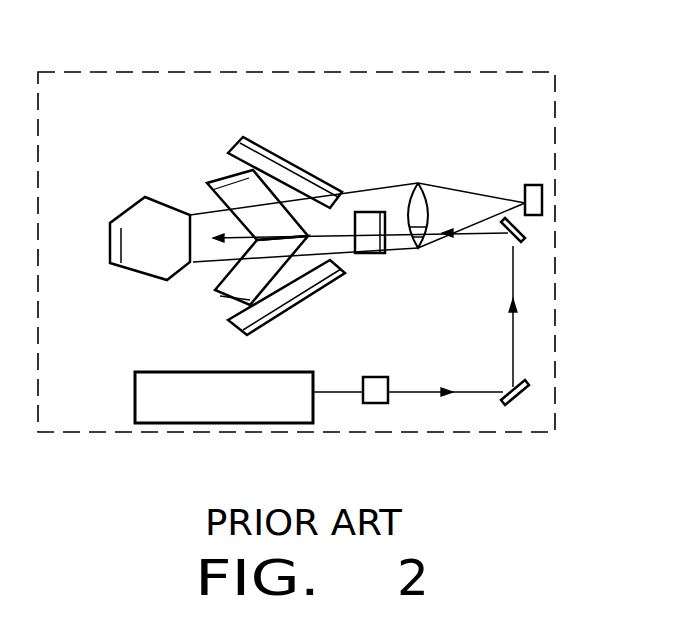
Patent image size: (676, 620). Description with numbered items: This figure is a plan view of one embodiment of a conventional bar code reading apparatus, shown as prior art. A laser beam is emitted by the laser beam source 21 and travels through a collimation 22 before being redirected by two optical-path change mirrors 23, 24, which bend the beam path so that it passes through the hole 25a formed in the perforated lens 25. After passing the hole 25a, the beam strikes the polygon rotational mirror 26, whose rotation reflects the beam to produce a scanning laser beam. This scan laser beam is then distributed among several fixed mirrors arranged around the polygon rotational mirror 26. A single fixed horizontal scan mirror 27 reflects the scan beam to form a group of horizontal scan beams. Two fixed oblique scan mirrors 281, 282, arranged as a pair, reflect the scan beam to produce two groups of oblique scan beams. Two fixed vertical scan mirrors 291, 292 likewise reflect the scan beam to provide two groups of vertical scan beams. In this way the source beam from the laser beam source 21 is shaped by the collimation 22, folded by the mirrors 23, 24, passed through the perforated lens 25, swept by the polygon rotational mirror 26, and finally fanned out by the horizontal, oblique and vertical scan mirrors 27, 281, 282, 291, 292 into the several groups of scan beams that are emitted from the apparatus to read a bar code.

The laser beam source 21 is at (197, 423).
The collimation 22 is at (377, 393).
The optical-path change mirror 23 is at (512, 403).
The optical-path change mirror 24 is at (524, 240).
The perforated lens 25 is at (420, 200).
The hole 25a is at (414, 255).
The polygon rotational mirror 26 is at (151, 207).
The fixed horizontal scan mirror 27 is at (373, 212).
The fixed oblique scan mirror 281 is at (232, 190).
The fixed oblique scan mirror 282 is at (235, 284).
The fixed vertical scan mirror 291 is at (278, 168).
The fixed vertical scan mirror 292 is at (313, 278).